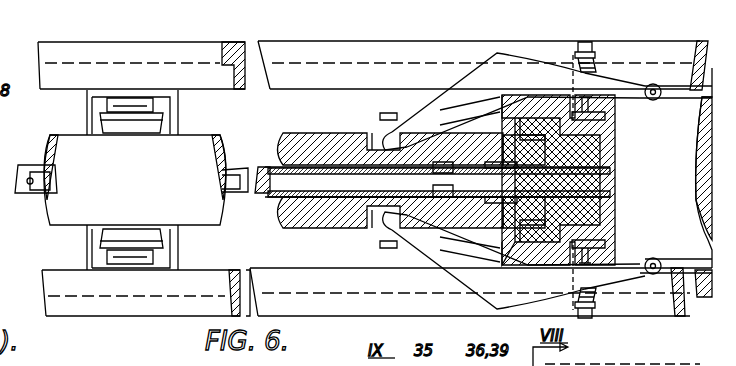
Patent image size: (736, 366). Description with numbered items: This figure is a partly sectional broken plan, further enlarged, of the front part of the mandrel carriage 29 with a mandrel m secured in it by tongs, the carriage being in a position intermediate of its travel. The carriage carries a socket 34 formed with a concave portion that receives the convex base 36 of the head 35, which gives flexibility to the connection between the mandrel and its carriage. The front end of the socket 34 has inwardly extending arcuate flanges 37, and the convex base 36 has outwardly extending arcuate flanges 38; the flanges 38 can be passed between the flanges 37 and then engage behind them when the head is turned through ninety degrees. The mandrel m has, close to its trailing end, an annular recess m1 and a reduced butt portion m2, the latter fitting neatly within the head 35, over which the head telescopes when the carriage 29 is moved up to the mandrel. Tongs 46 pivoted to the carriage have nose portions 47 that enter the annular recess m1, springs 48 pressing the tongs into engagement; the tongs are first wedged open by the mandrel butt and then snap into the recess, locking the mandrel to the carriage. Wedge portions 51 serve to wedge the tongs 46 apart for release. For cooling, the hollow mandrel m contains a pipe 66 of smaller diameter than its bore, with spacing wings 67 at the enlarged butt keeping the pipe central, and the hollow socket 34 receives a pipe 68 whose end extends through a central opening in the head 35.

The mandrel carriage 29 is at (686, 236).
The socket 34 is at (508, 108).
The head 35 is at (492, 142).
The convex base 36 is at (557, 143).
The arcuate flanges of the socket 37 is at (488, 110).
The arcuate flanges of the head 38 is at (545, 126).
The tongs 46 is at (443, 100).
The nose portions 47 is at (393, 137).
The springs 48 is at (592, 72).
The wedge portions 51 is at (128, 110).
The pipe 66 is at (42, 186).
The spacing wings 67 is at (463, 193).
The pipe 68 is at (607, 177).
The mandrel m is at (226, 135).
The annular recess m1 is at (376, 146).
The reduced butt portion m2 is at (384, 239).